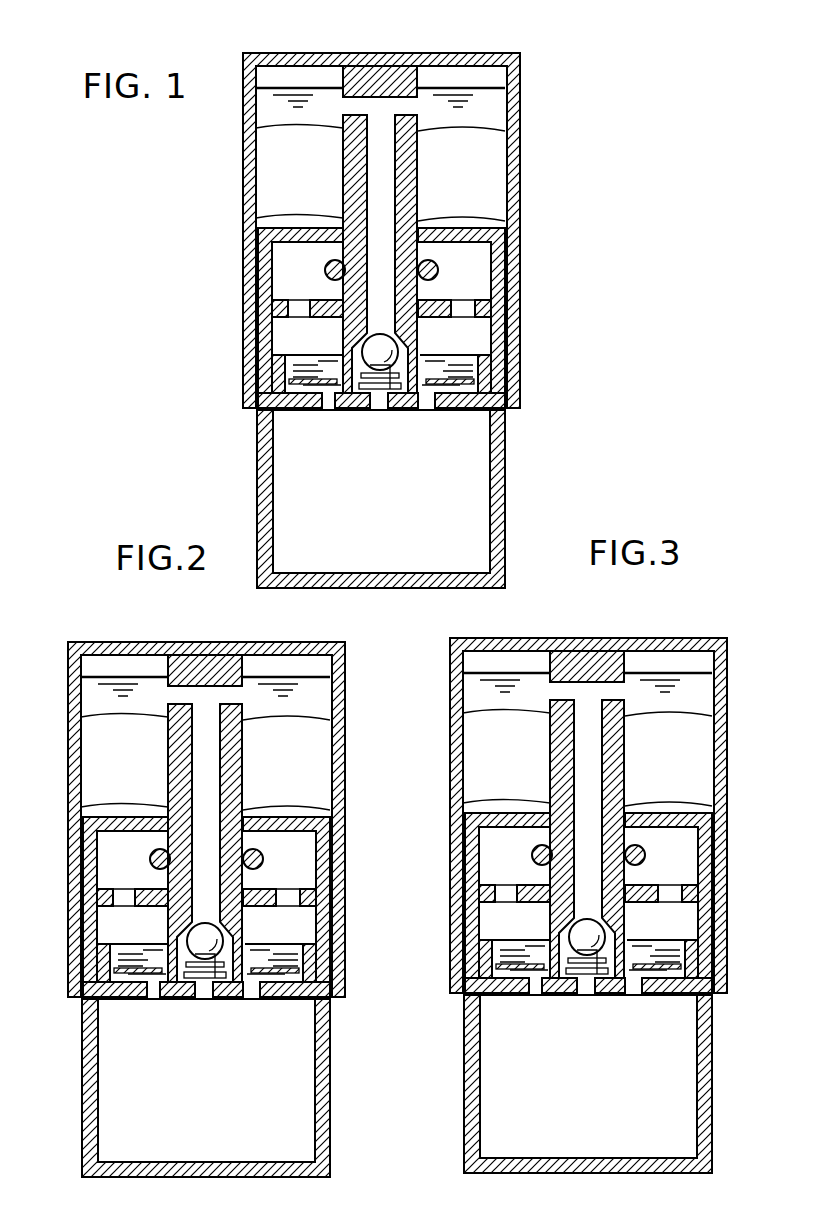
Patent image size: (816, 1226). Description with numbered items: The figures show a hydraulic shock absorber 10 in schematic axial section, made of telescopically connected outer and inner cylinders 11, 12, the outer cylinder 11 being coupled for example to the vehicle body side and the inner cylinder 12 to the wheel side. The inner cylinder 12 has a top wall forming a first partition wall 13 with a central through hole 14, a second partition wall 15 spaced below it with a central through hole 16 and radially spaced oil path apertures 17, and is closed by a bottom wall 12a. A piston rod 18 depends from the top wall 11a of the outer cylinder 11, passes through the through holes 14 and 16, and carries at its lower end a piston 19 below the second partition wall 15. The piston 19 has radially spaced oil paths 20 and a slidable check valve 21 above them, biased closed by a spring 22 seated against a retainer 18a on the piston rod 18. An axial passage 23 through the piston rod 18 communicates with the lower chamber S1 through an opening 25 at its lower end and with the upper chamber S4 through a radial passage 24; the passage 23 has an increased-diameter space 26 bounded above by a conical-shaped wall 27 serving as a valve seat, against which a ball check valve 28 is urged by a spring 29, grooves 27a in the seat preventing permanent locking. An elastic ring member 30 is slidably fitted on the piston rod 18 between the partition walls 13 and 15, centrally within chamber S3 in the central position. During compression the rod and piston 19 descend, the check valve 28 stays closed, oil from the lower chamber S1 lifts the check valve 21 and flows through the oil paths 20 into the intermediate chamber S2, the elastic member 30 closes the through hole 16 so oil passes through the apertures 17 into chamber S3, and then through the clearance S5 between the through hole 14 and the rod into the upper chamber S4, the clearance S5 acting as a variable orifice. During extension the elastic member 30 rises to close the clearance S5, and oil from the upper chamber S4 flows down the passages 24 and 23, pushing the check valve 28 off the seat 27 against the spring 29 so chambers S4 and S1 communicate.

In FIG. 1, the hydraulic shock absorber 10 is at (277, 160).
In FIG. 2, the hydraulic shock absorber 10 is at (198, 904).
In FIG. 3, the hydraulic shock absorber 10 is at (591, 893).
In FIG. 1, the outer cylinder 11 is at (277, 47).
In FIG. 2, the outer cylinder 11 is at (220, 819).
In FIG. 3, the outer cylinder 11 is at (608, 815).
In FIG. 1, the top wall 11a is at (380, 56).
In FIG. 2, the top wall 11a is at (205, 647).
In FIG. 3, the top wall 11a is at (587, 641).
In FIG. 1, the inner cylinder 12 is at (262, 447).
In FIG. 2, the inner cylinder 12 is at (186, 1088).
In FIG. 3, the inner cylinder 12 is at (570, 1084).
In FIG. 1, the bottom wall 12a is at (381, 605).
In FIG. 2, the bottom wall 12a is at (206, 1193).
In FIG. 3, the bottom wall 12a is at (588, 1190).
In FIG. 1, the first partition wall 13 is at (257, 177).
In FIG. 2, the first partition wall 13 is at (231, 877).
In FIG. 3, the first partition wall 13 is at (616, 868).
In FIG. 1, the central through hole 14 is at (398, 229).
In FIG. 2, the central through hole 14 is at (275, 818).
In FIG. 3, the central through hole 14 is at (658, 814).
In FIG. 1, the second partition wall 15 is at (441, 293).
In FIG. 2, the second partition wall 15 is at (259, 885).
In FIG. 3, the second partition wall 15 is at (642, 863).
In FIG. 1, the central through hole 16 is at (341, 302).
In FIG. 2, the central through hole 16 is at (171, 894).
In FIG. 3, the central through hole 16 is at (623, 848).
In FIG. 1, the oil path apertures 17 is at (382, 285).
In FIG. 2, the oil path apertures 17 is at (205, 866).
In FIG. 3, the oil path apertures 17 is at (590, 878).
In FIG. 1, the piston rod 18 is at (347, 167).
In FIG. 2, the piston rod 18 is at (177, 762).
In FIG. 3, the piston rod 18 is at (615, 749).
In FIG. 1, the retainer 18a is at (421, 374).
In FIG. 2, the retainer 18a is at (167, 975).
In FIG. 3, the retainer 18a is at (629, 931).
In FIG. 1, the piston 19 is at (347, 415).
In FIG. 2, the piston 19 is at (233, 973).
In FIG. 3, the piston 19 is at (616, 955).
In FIG. 1, the oil paths 20 is at (415, 422).
In FIG. 2, the oil paths 20 is at (202, 1022).
In FIG. 3, the oil paths 20 is at (593, 1019).
In FIG. 1, the slidable check valve 21 is at (381, 428).
In FIG. 2, the slidable check valve 21 is at (206, 999).
In FIG. 3, the slidable check valve 21 is at (588, 999).
In FIG. 1, the spring 22 is at (381, 418).
In FIG. 2, the spring 22 is at (255, 943).
In FIG. 3, the spring 22 is at (638, 964).
In FIG. 1, the passage 23 is at (380, 60).
In FIG. 2, the passage 23 is at (276, 679).
In FIG. 3, the passage 23 is at (658, 661).
In FIG. 1, the passage 24 is at (361, 169).
In FIG. 2, the passage 24 is at (272, 760).
In FIG. 3, the passage 24 is at (597, 754).
In FIG. 1, the opening 25 is at (362, 422).
In FIG. 2, the opening 25 is at (186, 1006).
In FIG. 3, the opening 25 is at (571, 1006).
In FIG. 1, the increased-diameter space 26 is at (388, 421).
In FIG. 2, the increased-diameter space 26 is at (170, 1008).
In FIG. 3, the increased-diameter space 26 is at (506, 968).
In FIG. 1, the conical-shaped wall 27 is at (332, 361).
In FIG. 2, the conical-shaped wall 27 is at (165, 948).
In FIG. 3, the conical-shaped wall 27 is at (547, 944).
In FIG. 1, the grooves 27a is at (394, 244).
In FIG. 2, the grooves 27a is at (225, 842).
In FIG. 3, the grooves 27a is at (578, 853).
In FIG. 1, the check valve 28 is at (461, 351).
In FIG. 2, the check valve 28 is at (128, 945).
In FIG. 3, the check valve 28 is at (586, 989).
In FIG. 1, the spring 29 is at (296, 386).
In FIG. 2, the spring 29 is at (205, 1012).
In FIG. 3, the spring 29 is at (603, 1009).
In FIG. 1, the elastic ring member 30 is at (442, 252).
In FIG. 2, the elastic ring member 30 is at (266, 834).
In FIG. 3, the elastic ring member 30 is at (567, 792).
In FIG. 1, the lower chamber S1 is at (516, 466).
In FIG. 2, the lower chamber S1 is at (334, 1119).
In FIG. 3, the lower chamber S1 is at (527, 1178).
In FIG. 1, the intermediate chamber S2 is at (244, 331).
In FIG. 2, the intermediate chamber S2 is at (71, 926).
In FIG. 3, the intermediate chamber S2 is at (457, 911).
In FIG. 1, the intermediate chamber S3 is at (546, 251).
In FIG. 2, the intermediate chamber S3 is at (71, 827).
In FIG. 3, the intermediate chamber S3 is at (457, 846).
In FIG. 1, the upper chamber S4 is at (236, 171).
In FIG. 2, the upper chamber S4 is at (108, 644).
In FIG. 3, the upper chamber S4 is at (444, 696).
In FIG. 1, the clearance S5 is at (267, 206).
In FIG. 3, the clearance S5 is at (552, 629).